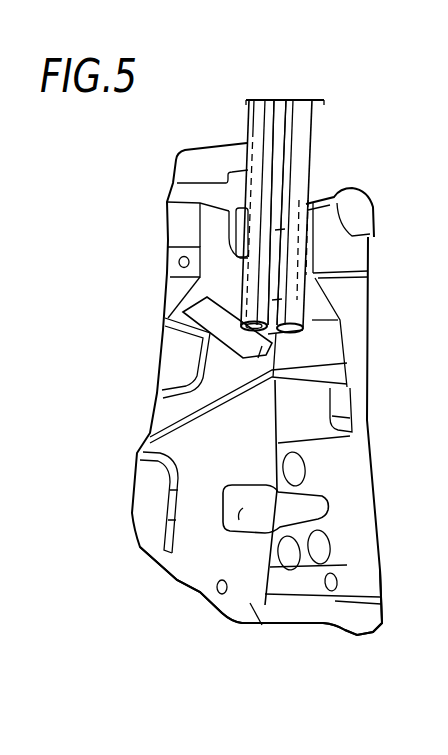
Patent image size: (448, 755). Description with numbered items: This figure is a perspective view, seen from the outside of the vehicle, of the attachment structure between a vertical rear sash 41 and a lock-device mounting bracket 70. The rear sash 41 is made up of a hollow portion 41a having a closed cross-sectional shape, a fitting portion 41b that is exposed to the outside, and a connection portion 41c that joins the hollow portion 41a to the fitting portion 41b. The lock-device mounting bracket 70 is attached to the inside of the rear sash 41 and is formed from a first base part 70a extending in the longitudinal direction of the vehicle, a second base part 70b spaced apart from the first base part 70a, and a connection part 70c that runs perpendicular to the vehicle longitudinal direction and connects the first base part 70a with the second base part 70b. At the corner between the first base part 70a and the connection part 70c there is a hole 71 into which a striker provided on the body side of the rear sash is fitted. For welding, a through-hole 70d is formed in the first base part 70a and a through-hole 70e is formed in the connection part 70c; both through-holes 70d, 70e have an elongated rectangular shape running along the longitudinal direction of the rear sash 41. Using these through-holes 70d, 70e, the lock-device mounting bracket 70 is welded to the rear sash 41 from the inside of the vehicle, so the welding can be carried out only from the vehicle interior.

The rear sash 41 is at (330, 194).
The hollow portion 41a is at (274, 108).
The fitting portion 41b is at (307, 146).
The connection portion 41c is at (286, 130).
The lock-device mounting bracket 70 is at (255, 433).
The first base part 70a is at (253, 603).
The second base part 70b is at (340, 617).
The connection part 70c is at (300, 613).
The through-hole 70d is at (234, 231).
The through-hole 70e is at (327, 197).
The hole 71 is at (237, 516).